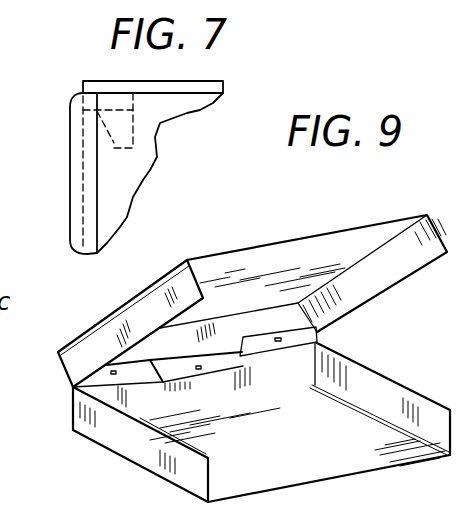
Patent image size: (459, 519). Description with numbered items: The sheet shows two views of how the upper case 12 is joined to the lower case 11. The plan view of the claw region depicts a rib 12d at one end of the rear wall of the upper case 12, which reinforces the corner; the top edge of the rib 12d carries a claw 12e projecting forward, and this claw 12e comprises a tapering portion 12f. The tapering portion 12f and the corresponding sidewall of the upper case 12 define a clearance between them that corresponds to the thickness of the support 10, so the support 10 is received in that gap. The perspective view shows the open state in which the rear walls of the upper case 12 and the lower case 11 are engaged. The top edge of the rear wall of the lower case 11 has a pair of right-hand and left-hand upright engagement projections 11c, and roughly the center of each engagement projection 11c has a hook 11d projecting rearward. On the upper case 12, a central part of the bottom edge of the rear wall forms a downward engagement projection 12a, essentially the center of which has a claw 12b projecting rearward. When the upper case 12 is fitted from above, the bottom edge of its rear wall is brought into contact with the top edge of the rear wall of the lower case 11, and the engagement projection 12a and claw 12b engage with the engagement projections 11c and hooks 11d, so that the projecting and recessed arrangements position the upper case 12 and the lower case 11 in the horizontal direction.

In FIG. 7, the support 10 is at (83, 207).
In FIG. 9, the lower case 11 is at (342, 458).
In FIG. 9, the upper case 12 is at (243, 262).
In FIG. 9, the engagement projection 11c is at (294, 340).
In FIG. 9, the hook 11d is at (278, 337).
In FIG. 9, the engagement projection 12a is at (240, 363).
In FIG. 9, the claw 12b is at (202, 378).
In FIG. 7, the rib 12d is at (117, 96).
In FIG. 7, the claw 12e is at (127, 130).
In FIG. 7, the tapering portion 12f is at (110, 147).